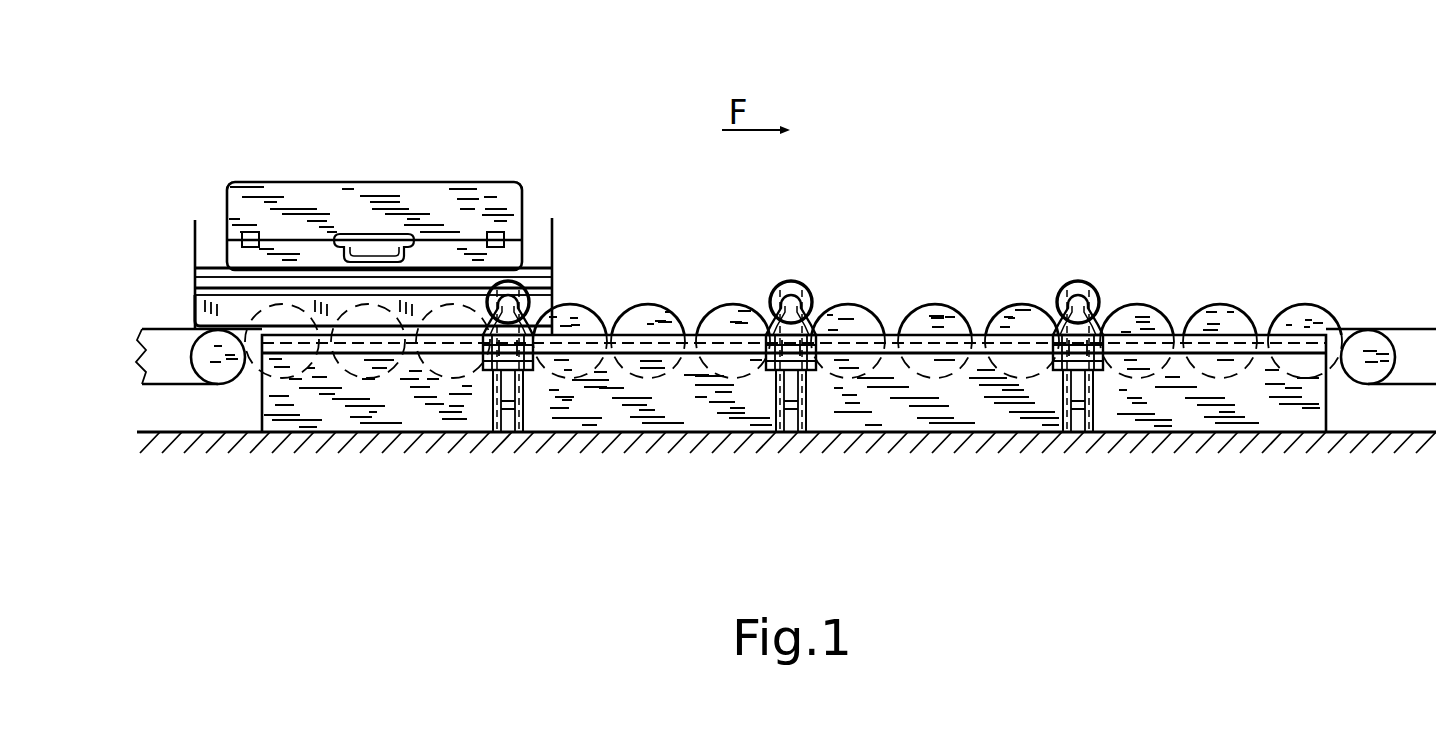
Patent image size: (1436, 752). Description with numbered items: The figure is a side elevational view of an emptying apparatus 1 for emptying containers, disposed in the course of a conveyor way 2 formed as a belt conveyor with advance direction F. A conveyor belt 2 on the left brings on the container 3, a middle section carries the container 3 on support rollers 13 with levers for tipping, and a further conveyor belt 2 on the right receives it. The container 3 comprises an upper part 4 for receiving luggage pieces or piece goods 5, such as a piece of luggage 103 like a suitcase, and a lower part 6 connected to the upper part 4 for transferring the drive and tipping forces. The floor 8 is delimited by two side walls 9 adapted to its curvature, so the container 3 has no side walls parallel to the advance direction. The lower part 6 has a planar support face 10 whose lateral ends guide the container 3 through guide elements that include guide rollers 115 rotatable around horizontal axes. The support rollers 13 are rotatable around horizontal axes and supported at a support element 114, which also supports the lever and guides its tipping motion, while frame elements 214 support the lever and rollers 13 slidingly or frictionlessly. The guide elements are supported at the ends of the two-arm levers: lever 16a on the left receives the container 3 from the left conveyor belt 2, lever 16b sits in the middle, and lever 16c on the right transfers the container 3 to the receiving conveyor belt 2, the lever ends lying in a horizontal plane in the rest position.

The emptying apparatus 1 is at (770, 252).
The conveyor way 2 is at (173, 349).
The container 3 is at (195, 273).
The upper part 4 is at (530, 282).
The piece goods 5 is at (430, 200).
The lower part 6 is at (542, 303).
The floor 8 is at (227, 270).
The side walls 9 is at (193, 226).
The planar support face 10 is at (195, 325).
The support rollers 13 is at (965, 318).
The two-arm lever 16a is at (520, 370).
The two-arm lever 16b is at (807, 370).
The two-arm lever 16c is at (1095, 370).
The piece of luggage 103 is at (317, 200).
The support element 114 is at (1085, 405).
The guide rollers 115 is at (1096, 298).
The frame elements 214 is at (1328, 402).